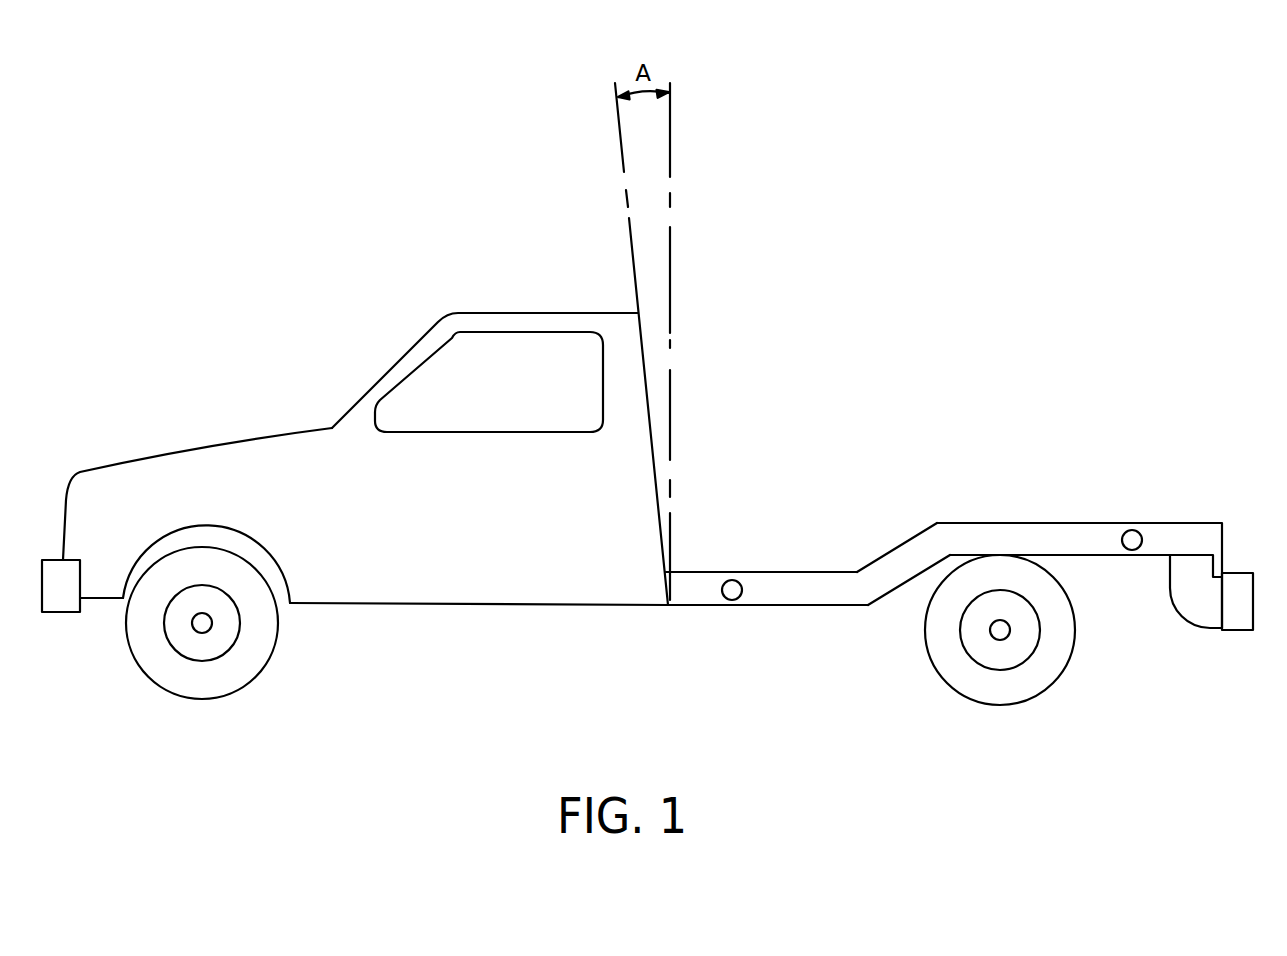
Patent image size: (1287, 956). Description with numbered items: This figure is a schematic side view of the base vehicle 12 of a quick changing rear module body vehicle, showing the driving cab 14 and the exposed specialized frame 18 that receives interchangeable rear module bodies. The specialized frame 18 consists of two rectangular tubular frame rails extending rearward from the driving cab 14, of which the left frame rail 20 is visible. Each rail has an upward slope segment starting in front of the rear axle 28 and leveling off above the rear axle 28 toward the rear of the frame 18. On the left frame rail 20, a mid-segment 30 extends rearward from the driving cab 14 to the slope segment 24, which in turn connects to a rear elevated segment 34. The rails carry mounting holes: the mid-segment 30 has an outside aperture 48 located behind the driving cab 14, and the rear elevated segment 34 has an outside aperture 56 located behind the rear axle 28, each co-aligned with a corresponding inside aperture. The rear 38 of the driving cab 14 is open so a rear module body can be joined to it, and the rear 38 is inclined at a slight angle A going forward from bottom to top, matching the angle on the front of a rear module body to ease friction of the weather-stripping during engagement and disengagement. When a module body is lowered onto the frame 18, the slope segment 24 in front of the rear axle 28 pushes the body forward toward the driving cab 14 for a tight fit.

The base vehicle 12 is at (385, 391).
The driving cab 14 is at (488, 312).
The specialized frame 18 is at (807, 608).
The left frame rail 20 is at (781, 606).
The slope segment 24 is at (898, 547).
The rear axle 28 is at (1003, 633).
The mid-segment 30 is at (802, 570).
The rear elevated segment 34 is at (1095, 543).
The rear of the driving cab 38 is at (645, 383).
The outside aperture 48 is at (730, 580).
The outside aperture 56 is at (1140, 532).